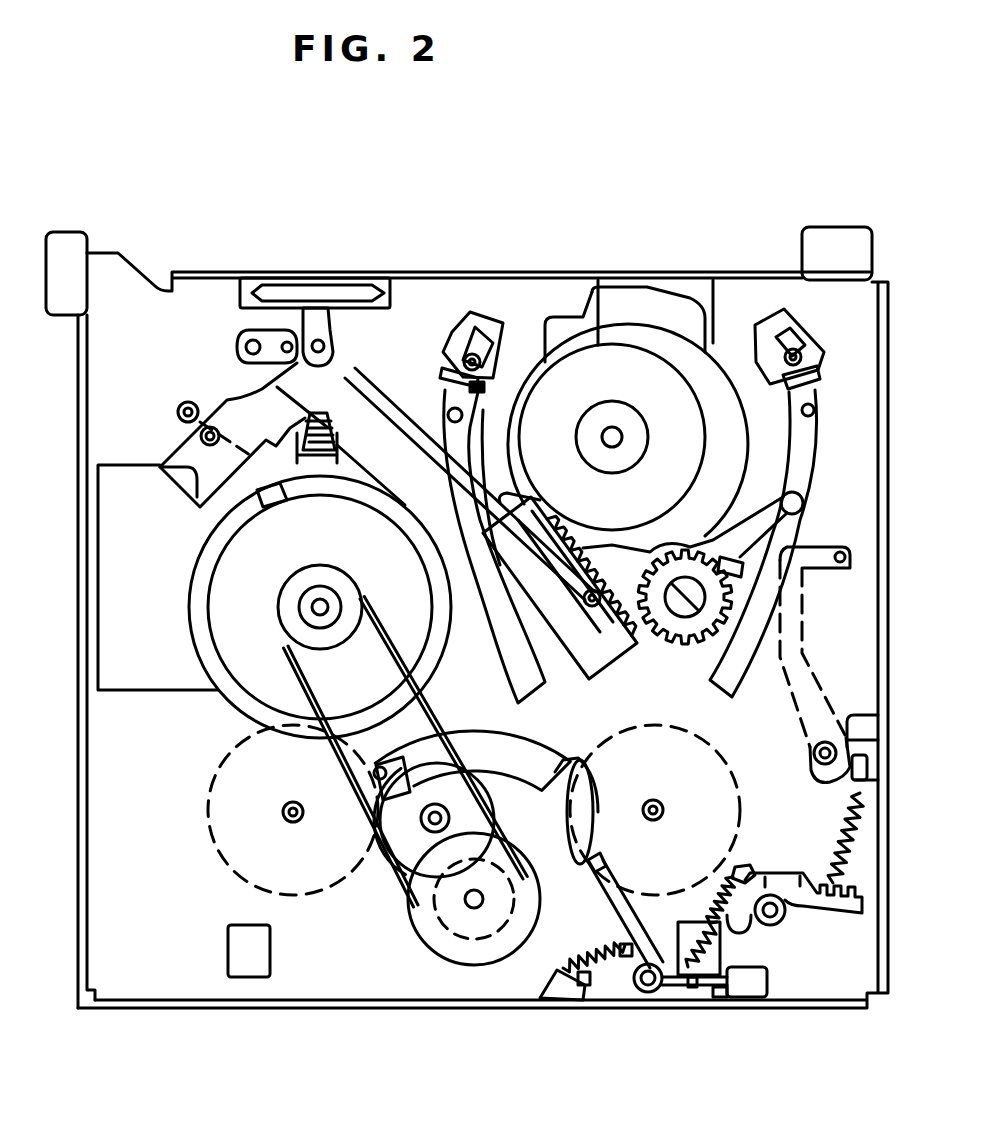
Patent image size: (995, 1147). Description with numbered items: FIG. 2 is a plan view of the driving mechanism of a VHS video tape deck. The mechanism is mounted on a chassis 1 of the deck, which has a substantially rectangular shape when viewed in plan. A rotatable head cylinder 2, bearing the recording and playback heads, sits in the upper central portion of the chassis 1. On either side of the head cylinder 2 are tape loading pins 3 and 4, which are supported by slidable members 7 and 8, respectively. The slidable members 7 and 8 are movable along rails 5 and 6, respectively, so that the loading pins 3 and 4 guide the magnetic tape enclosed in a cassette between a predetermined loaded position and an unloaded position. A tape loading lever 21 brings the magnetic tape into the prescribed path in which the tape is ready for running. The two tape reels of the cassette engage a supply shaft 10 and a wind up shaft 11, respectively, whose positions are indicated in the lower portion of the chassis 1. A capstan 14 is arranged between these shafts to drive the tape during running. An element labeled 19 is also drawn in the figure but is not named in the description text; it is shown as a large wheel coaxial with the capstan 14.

The chassis 1 is at (853, 443).
The rotatable head cylinder 2 is at (572, 363).
The tape loading pin 3 is at (800, 333).
The tape loading pin 4 is at (462, 348).
The rail 5 is at (752, 660).
The rail 6 is at (488, 637).
The slidable member 7 is at (828, 372).
The slidable member 8 is at (442, 372).
The supply shaft 10 is at (655, 818).
The wind up shaft 11 is at (297, 820).
The capstan 14 is at (316, 608).
The flywheel 19 is at (245, 705).
The tape loading lever 21 is at (585, 650).